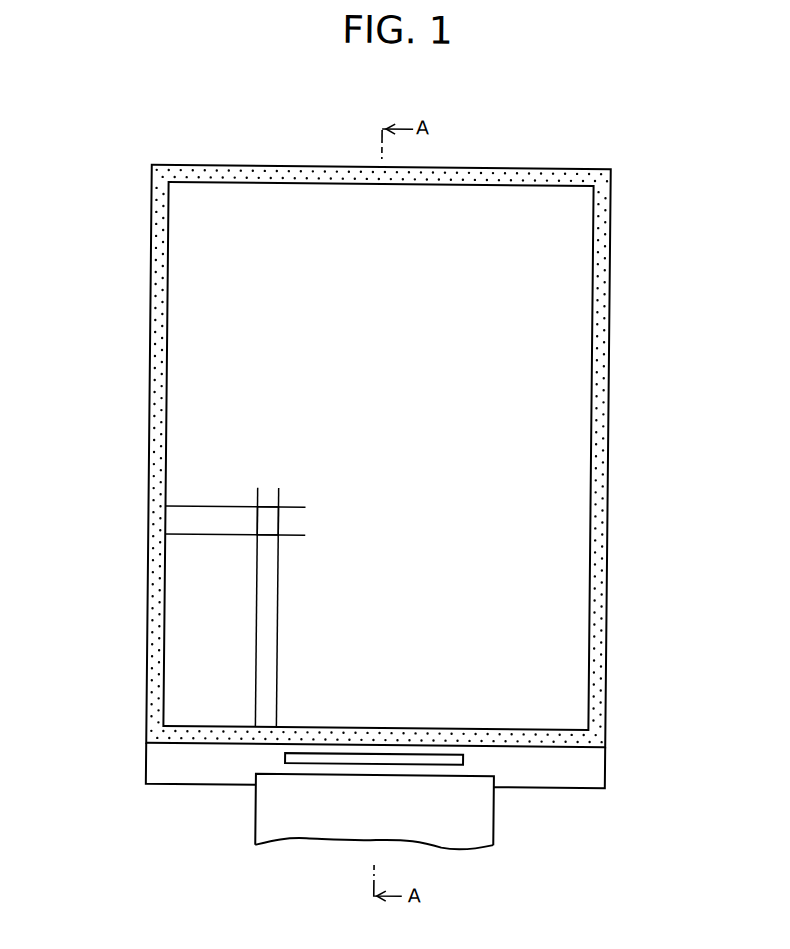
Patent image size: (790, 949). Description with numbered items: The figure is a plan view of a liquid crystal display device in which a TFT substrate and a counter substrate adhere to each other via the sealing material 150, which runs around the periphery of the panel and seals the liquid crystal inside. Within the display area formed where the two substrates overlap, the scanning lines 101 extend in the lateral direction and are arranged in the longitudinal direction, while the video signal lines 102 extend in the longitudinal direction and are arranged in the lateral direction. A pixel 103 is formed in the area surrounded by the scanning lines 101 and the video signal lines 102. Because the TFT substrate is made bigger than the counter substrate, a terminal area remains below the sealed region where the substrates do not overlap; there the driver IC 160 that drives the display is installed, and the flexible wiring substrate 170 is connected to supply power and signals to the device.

The scanning line 101 is at (210, 507).
The video signal line 102 is at (279, 594).
The pixel 103 is at (270, 521).
The sealing material 150 is at (605, 651).
The driver IC 160 is at (288, 758).
The flexible wiring substrate 170 is at (259, 821).